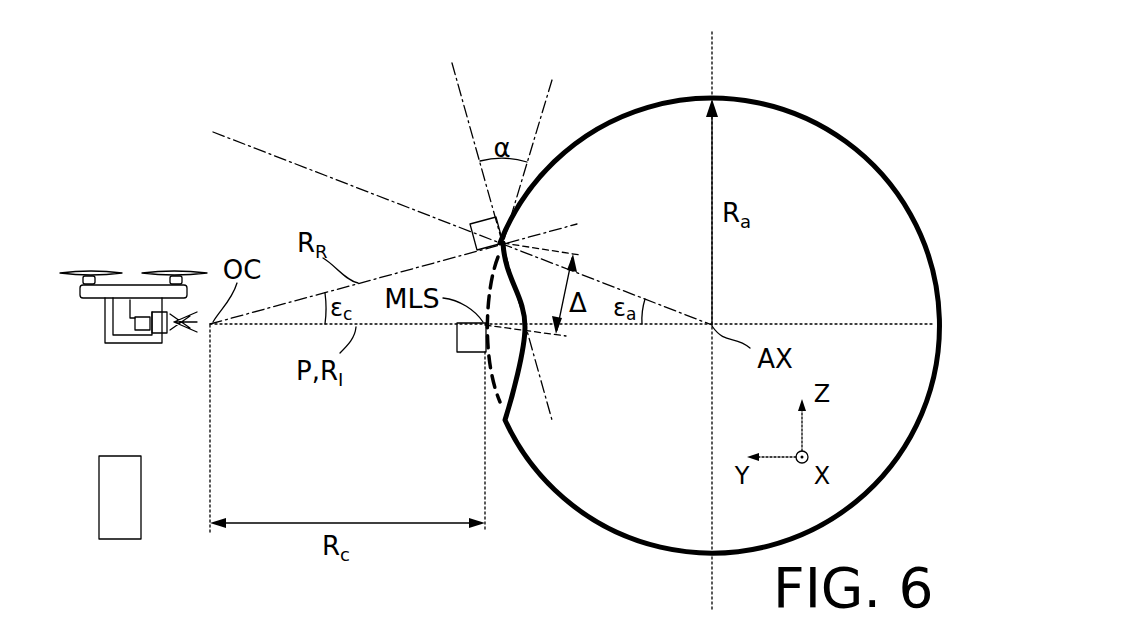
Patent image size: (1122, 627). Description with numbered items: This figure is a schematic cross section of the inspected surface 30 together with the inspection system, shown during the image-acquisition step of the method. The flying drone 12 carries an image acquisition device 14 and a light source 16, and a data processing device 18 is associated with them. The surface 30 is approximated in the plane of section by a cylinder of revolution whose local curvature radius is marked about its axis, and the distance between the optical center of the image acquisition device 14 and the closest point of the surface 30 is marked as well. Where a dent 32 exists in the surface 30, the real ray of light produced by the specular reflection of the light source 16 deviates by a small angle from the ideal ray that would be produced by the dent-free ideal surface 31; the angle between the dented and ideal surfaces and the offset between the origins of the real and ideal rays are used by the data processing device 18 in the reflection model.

The flying drone 12 is at (123, 268).
The image acquisition device 14 is at (142, 332).
The light source 16 is at (160, 310).
The data processing device 18 is at (123, 462).
The surface 30 is at (803, 116).
The ideal surface 31 is at (490, 374).
The dent 32 is at (487, 365).